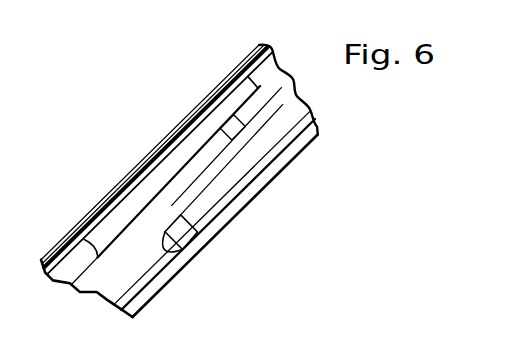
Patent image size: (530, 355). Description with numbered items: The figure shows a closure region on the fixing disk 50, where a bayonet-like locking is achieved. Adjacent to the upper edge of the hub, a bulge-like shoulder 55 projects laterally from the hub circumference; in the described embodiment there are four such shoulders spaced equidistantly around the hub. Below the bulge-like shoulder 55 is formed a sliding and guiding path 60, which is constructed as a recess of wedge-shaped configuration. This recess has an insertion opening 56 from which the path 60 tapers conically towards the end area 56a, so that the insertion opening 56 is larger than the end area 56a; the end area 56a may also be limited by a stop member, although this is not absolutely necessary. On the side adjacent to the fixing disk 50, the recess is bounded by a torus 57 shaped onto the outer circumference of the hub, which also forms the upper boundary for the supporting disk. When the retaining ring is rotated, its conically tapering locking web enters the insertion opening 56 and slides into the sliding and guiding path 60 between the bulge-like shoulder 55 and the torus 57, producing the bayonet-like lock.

The fixing disk 50 is at (176, 114).
The bulge-like shoulder 55 is at (254, 194).
The insertion opening 56 is at (150, 234).
The end area 56a is at (232, 148).
The torus 57 is at (113, 239).
The sliding and guiding path 60 is at (201, 240).